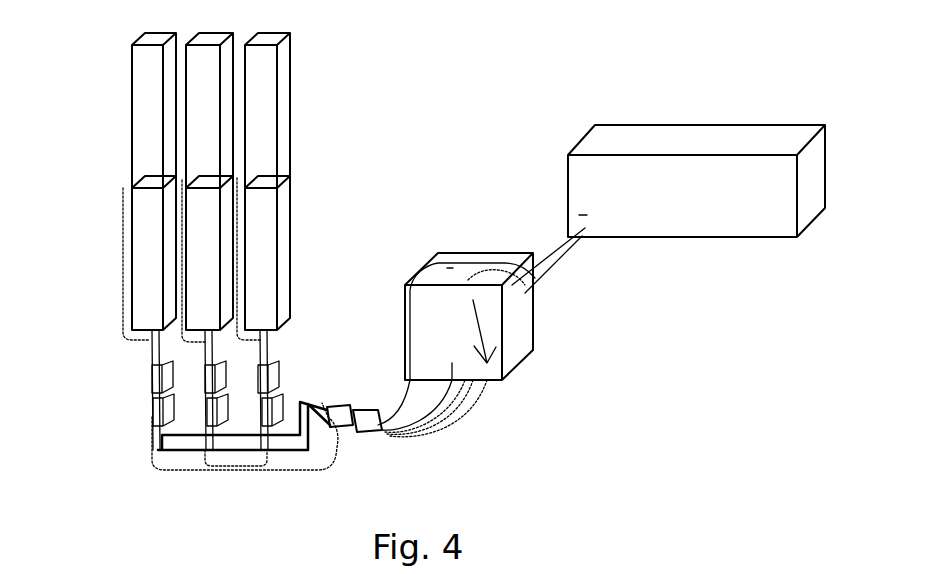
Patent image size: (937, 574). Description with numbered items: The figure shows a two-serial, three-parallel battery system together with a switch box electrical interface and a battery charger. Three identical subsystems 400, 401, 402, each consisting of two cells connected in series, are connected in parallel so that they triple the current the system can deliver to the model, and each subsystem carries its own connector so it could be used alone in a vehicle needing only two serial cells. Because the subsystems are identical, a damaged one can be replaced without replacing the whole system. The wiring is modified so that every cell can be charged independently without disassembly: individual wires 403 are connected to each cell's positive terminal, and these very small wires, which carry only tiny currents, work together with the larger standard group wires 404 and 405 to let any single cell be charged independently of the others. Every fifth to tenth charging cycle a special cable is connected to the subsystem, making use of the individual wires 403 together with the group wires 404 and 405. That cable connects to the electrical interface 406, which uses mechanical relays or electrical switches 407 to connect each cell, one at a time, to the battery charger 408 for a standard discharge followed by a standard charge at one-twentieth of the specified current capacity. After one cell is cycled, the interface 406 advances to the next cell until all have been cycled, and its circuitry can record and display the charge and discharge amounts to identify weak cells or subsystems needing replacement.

The first parallel subsystem 400 is at (132, 45).
The second parallel subsystem 401 is at (186, 45).
The third parallel subsystem 402 is at (245, 45).
The individual wires 403 is at (242, 250).
The standard group wire 404 is at (165, 357).
The standard group wire 405 is at (250, 415).
The electrical interface 406 is at (507, 253).
The mechanical relays or electrical switches 407 is at (478, 337).
The battery charger 408 is at (695, 237).